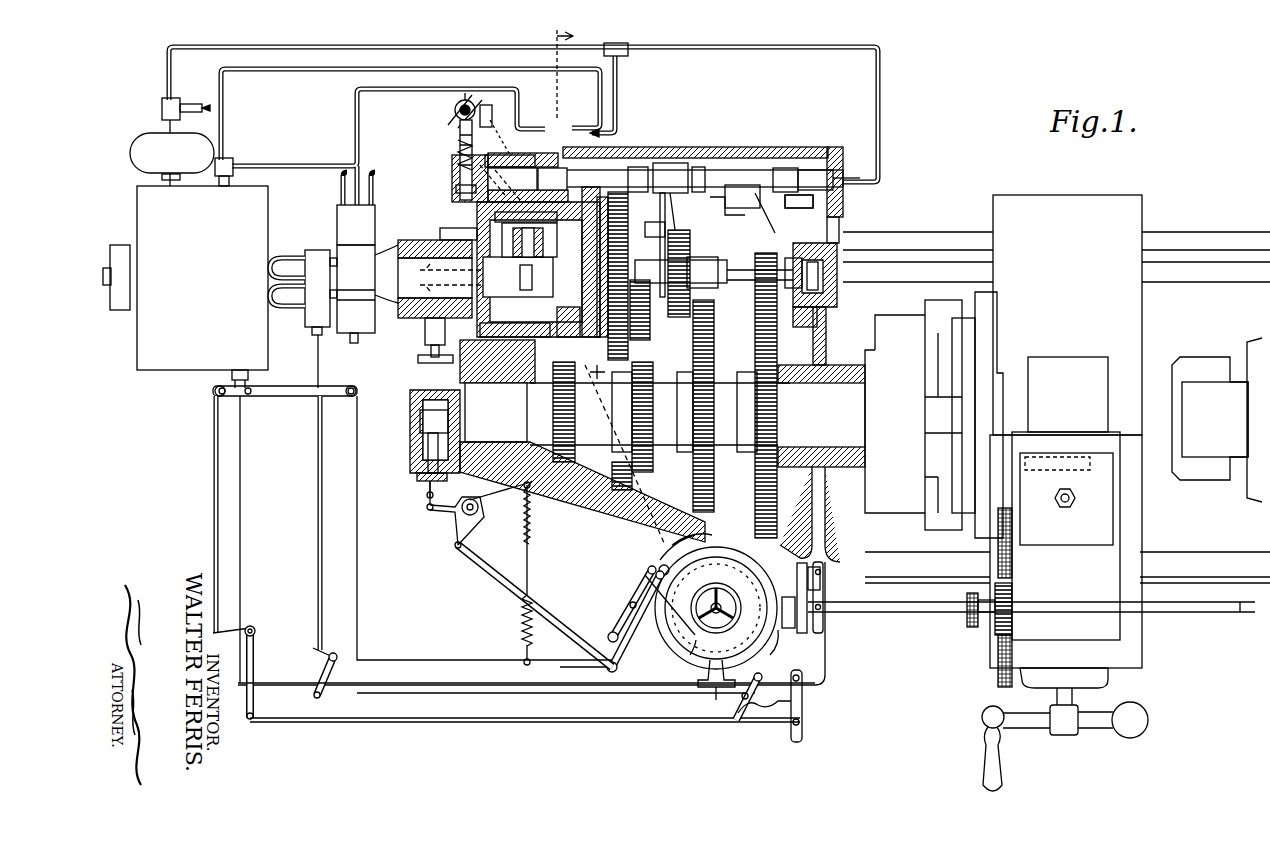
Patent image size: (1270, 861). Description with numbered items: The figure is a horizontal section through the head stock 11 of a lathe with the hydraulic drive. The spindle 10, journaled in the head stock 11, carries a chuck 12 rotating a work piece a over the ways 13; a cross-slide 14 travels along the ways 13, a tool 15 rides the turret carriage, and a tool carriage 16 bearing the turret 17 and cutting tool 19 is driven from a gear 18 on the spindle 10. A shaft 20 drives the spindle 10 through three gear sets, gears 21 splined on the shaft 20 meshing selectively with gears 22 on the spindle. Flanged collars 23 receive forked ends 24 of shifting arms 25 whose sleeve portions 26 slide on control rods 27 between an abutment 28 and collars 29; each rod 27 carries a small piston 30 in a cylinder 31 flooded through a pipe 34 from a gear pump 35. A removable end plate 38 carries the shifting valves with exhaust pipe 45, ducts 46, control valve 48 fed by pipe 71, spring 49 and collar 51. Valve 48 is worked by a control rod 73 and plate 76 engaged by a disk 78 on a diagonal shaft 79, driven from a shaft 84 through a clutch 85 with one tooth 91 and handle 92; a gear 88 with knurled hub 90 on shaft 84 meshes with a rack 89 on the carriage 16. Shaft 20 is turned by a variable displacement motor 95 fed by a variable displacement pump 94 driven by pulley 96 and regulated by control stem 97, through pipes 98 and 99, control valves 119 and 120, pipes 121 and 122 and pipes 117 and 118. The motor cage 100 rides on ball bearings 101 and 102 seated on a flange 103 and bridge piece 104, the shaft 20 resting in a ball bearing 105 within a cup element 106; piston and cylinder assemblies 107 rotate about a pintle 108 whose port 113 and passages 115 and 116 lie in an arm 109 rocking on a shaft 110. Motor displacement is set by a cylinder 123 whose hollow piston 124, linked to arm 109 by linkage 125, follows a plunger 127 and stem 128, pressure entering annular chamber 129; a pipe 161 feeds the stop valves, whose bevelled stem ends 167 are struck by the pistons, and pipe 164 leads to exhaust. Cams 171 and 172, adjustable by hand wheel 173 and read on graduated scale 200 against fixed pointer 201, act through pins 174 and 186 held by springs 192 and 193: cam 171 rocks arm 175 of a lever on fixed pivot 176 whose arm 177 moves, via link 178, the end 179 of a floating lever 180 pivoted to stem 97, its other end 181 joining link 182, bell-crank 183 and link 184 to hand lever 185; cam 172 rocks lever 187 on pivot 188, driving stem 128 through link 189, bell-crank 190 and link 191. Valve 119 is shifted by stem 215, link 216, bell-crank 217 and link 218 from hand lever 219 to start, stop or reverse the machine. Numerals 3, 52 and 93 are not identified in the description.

The section line 3 is at (602, 280).
The spindle 10 is at (728, 380).
The head stock 11 is at (745, 150).
The chuck 12 is at (893, 508).
The ways 13 is at (923, 247).
The cross-slide 14 is at (1130, 232).
The tool 15 is at (1200, 360).
The tool carriage 16 is at (1105, 625).
The turret 17 is at (1085, 540).
The gear 18 is at (575, 457).
The cutting tool 19 is at (1039, 437).
The shaft 20 is at (712, 260).
The gears 21 is at (755, 290).
The gears 22 is at (775, 510).
The flanged collars 23 is at (628, 295).
The forked ends 24 is at (783, 248).
The shifting arms 25 is at (760, 228).
The sleeve portions 26 is at (742, 185).
The control rods 27 is at (590, 182).
The abutment 28 is at (705, 170).
The collar 29 is at (778, 168).
The small piston 30 is at (815, 170).
The cylinder 31 is at (840, 160).
The pipe 34 is at (407, 50).
The gear pump 35 is at (144, 132).
The removable end plate 38 is at (425, 340).
The exhaust pipe 45 is at (296, 168).
The duct 46 is at (497, 188).
The control valve 48 is at (455, 110).
The spring 49 is at (456, 150).
The collar 51 is at (455, 169).
The valve seat 52 is at (505, 158).
The pipe 71 is at (183, 102).
The control rod 73 is at (455, 96).
The plate 76 is at (458, 130).
The disk 78 is at (494, 110).
The shaft 79 is at (618, 417).
The shaft 84 is at (882, 622).
The clutch 85 is at (788, 628).
The gear 88 is at (993, 640).
The rack 89 is at (1012, 570).
The knurled hub extension 90 is at (967, 640).
The tooth 91 is at (823, 580).
The handle 92 is at (808, 630).
The passage 93 is at (505, 137).
The variable displacement pump 94 is at (145, 335).
The variable displacement hydraulic motor 95 is at (505, 386).
The pulley 96 is at (122, 243).
The control stem 97 is at (244, 370).
The pipe 98 is at (292, 259).
The pipe 99 is at (292, 305).
The cage 100 is at (530, 292).
The ball bearing 101 is at (500, 230).
The ball bearing 102 is at (568, 332).
The inturned circular flange 103 is at (495, 235).
The bridge piece 104 is at (590, 332).
The ball bearing 105 is at (800, 312).
The cup element 106 is at (837, 290).
The piston and cylinder assemblies 107 is at (548, 258).
The pintle 108 is at (410, 318).
The upright arm 109 is at (410, 240).
The shaft 110 is at (358, 225).
The port 113 is at (540, 275).
The passage 115 is at (452, 240).
The passage 116 is at (412, 292).
The pipe 117 is at (356, 289).
The pipe 118 is at (356, 311).
The control valve 119 is at (306, 338).
The control valve 120 is at (352, 343).
The pipe 121 is at (322, 263).
The pipe 122 is at (322, 295).
The cylinder 123 is at (410, 400).
The hollow piston 124 is at (452, 420).
The linkage 125 is at (445, 350).
The hollow plunger 127 is at (422, 458).
The stem 128 is at (427, 500).
The annular chamber 129 is at (418, 437).
The pipe 161 is at (620, 80).
The pipe 164 is at (305, 74).
The bevelled end 167 is at (553, 179).
The cam 171 is at (772, 652).
The cam 172 is at (684, 660).
The hand wheel 173 is at (677, 547).
The pin 174 is at (652, 565).
The arm 175 is at (636, 625).
The fixed pivot 176 is at (608, 662).
The arm 177 is at (466, 632).
The link 178 is at (358, 566).
The end 179 is at (350, 392).
The floating lever 180 is at (284, 398).
The end 181 is at (220, 388).
The link 182 is at (216, 518).
The bell-crank 183 is at (256, 642).
The link 184 is at (410, 723).
The hand lever 185 is at (803, 722).
The pin 186 is at (660, 572).
The lever 187 is at (635, 600).
The pivot 188 is at (610, 630).
The link 189 is at (542, 583).
The bell-crank 190 is at (457, 515).
The link 191 is at (446, 492).
The spring 192 is at (518, 620).
The spring 193 is at (500, 517).
The graduated scale 200 is at (716, 617).
The fixed pointer 201 is at (710, 698).
The stem 215 is at (316, 360).
The link 216 is at (318, 490).
The bell-crank 217 is at (312, 672).
The link 218 is at (512, 722).
The hand lever 219 is at (745, 722).
The work piece a is at (985, 352).